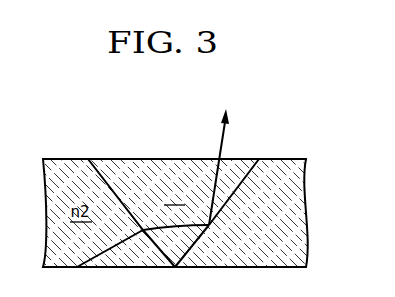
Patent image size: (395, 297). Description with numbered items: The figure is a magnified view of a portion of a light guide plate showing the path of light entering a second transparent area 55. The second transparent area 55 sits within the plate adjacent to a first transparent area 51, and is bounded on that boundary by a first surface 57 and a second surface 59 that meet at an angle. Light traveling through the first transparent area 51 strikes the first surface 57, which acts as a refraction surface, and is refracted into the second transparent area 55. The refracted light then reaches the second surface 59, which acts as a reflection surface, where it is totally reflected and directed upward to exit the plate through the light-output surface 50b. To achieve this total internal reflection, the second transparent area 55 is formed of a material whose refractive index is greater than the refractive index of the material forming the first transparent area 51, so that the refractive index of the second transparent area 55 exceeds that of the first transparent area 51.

The first transparent area 51 is at (305, 220).
The light-output surface 50b is at (175, 159).
The second transparent area 55 is at (143, 175).
The first surface 57 is at (114, 190).
The second surface 59 is at (238, 183).